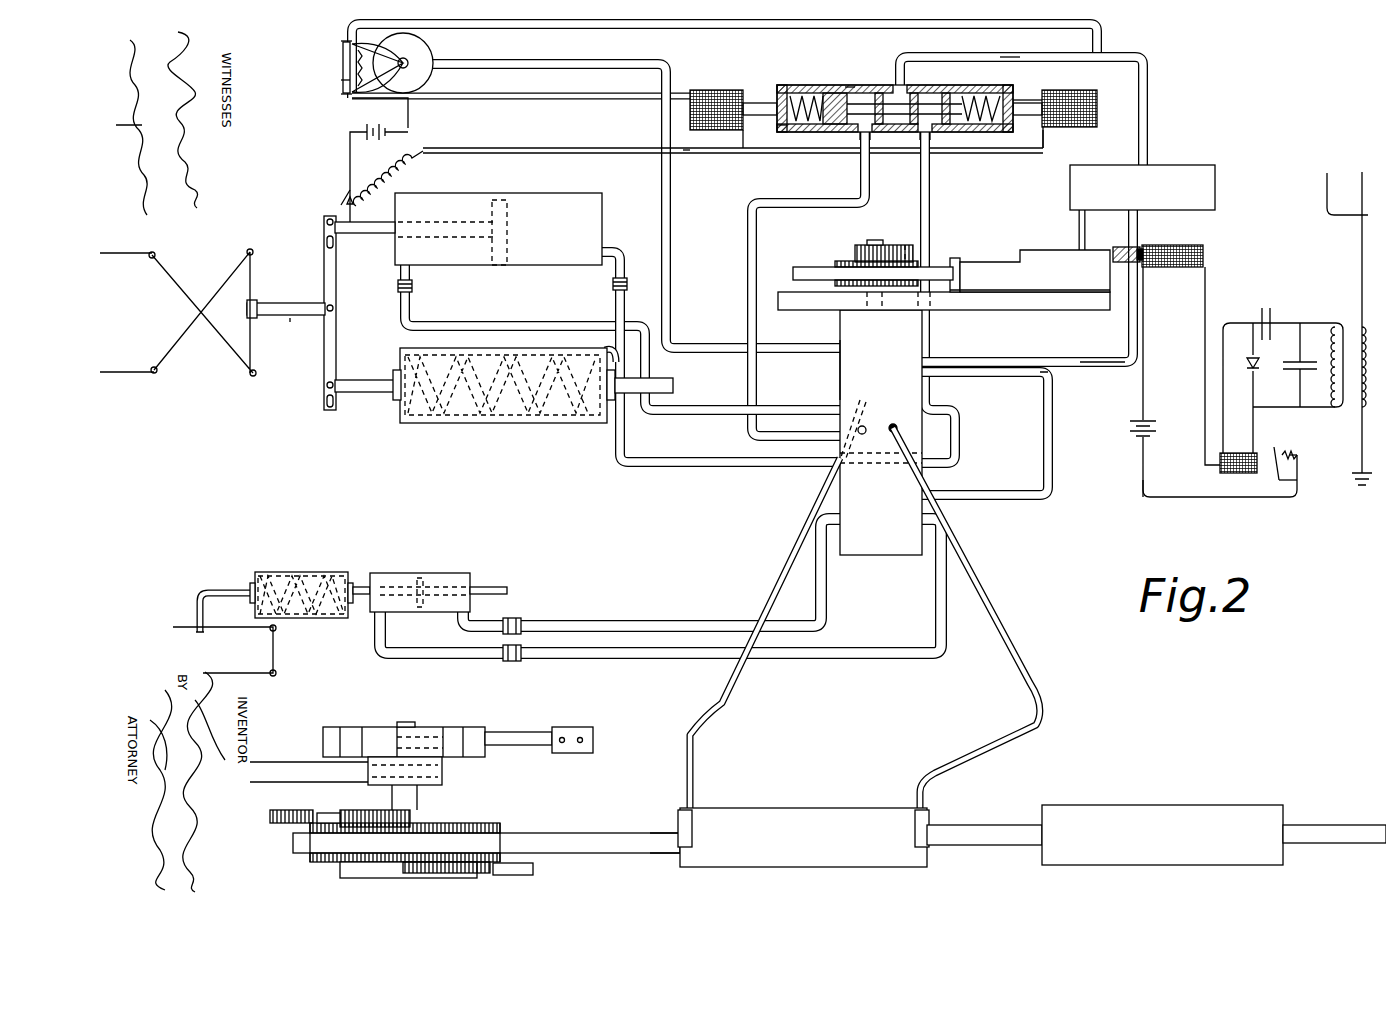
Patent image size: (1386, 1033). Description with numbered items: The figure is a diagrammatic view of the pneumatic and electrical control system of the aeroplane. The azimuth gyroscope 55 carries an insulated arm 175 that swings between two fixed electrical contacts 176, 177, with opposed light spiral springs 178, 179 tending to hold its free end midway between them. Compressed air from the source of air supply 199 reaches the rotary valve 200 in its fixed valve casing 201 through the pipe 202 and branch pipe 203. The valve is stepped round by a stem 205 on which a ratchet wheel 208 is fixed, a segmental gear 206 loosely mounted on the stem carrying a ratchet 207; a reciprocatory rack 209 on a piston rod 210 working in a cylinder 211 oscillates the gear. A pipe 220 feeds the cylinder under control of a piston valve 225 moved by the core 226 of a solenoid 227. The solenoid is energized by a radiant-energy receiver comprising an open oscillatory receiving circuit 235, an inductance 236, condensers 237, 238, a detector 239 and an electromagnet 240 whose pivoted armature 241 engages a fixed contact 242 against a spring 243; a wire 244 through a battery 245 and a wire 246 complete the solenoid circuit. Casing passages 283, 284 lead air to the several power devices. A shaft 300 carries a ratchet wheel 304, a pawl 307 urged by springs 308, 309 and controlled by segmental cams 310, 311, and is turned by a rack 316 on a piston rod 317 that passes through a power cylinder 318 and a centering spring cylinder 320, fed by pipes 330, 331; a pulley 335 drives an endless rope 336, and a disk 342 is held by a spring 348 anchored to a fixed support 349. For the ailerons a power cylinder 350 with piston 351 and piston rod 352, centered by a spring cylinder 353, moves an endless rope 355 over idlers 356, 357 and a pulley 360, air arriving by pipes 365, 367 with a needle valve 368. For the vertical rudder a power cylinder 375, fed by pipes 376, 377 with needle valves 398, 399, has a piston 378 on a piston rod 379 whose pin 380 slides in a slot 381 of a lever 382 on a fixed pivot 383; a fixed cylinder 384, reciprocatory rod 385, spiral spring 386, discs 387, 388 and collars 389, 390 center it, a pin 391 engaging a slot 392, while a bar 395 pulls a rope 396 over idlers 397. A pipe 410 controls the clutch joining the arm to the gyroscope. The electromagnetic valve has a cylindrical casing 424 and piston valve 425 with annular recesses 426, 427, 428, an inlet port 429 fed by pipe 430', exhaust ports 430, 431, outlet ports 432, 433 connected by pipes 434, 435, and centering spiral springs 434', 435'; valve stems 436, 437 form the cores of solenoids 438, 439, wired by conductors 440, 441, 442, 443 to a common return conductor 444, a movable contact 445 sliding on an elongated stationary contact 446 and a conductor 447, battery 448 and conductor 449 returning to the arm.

The azimuth gyroscope 55 is at (426, 52).
The arm 175 is at (362, 90).
The electrical contact 176 is at (342, 58).
The electrical contact 177 is at (343, 80).
The spiral spring 178 is at (345, 96).
The spiral spring 179 is at (341, 46).
The source of air supply 199 is at (1188, 166).
The rotary valve 200 is at (883, 556).
The valve casing 201 is at (838, 378).
The pipe 202 is at (983, 378).
The branch pipe 203 is at (1000, 495).
The stem 205 is at (880, 244).
The segmental gear 206 is at (838, 263).
The ratchet 207 is at (905, 240).
The ratchet wheel 208 is at (866, 242).
The reciprocatory rack 209 is at (796, 272).
The piston rod 210 is at (955, 262).
The cylinder 211 is at (1000, 262).
The pipe 220 is at (1079, 228).
The piston valve 225 is at (1120, 250).
The core 226 is at (1141, 248).
The solenoid 227 is at (1200, 250).
The open oscillatory receiving circuit 235 is at (1360, 240).
The inductance 236 is at (1331, 332).
The condenser 237 is at (1265, 308).
The condenser 238 is at (1296, 370).
The detector 239 is at (1250, 370).
The electromagnet 240 is at (1235, 474).
The pivoted armature 241 is at (1290, 470).
The fixed contact 242 is at (1288, 482).
The spring 243 is at (1287, 452).
The wire 244 is at (1143, 478).
The battery 245 is at (1128, 431).
The wire 246 is at (1205, 378).
The passage 283 is at (893, 434).
The passage 284 is at (848, 438).
The shaft 300 is at (418, 797).
The ratchet wheel 304 is at (480, 823).
The pawl 307 is at (326, 815).
The spring 308 is at (500, 848).
The spring 309 is at (360, 812).
The segmental cam 310 is at (533, 866).
The segmental cam 311 is at (280, 812).
The rack 316 is at (300, 845).
The piston rod 317 is at (620, 832).
The power cylinder 318 is at (805, 810).
The spring cylinder 320 is at (1175, 806).
The pipe 330 is at (918, 815).
The pipe 331 is at (695, 815).
The pulley 335 is at (445, 772).
The endless rope 336 is at (275, 770).
The disk 342 is at (378, 736).
The spring 348 is at (520, 733).
The fixed support 349 is at (590, 730).
The power cylinder 350 is at (415, 573).
The piston 351 is at (428, 580).
The piston rod 352 is at (360, 585).
The spring cylinder 353 is at (300, 573).
The endless rope 355 is at (205, 672).
The idler 356 is at (278, 630).
The idler 357 is at (278, 672).
The pulley 360 is at (515, 621).
The pipe 365 is at (456, 660).
The pipe 367 is at (585, 630).
The needle valve 368 is at (518, 661).
The power cylinder 375 is at (565, 195).
The pipe 376 is at (624, 265).
The pipe 377 is at (510, 322).
The piston 378 is at (500, 200).
The piston rod 379 is at (438, 220).
The pin 380 is at (326, 220).
The slot 381 is at (326, 246).
The lever 382 is at (325, 362).
The fixed pivot 383 is at (334, 308).
The fixed cylinder 384 is at (490, 438).
The reciprocatory rod 385 is at (355, 384).
The spiral spring 386 is at (540, 422).
The disc 387 is at (410, 425).
The disc 388 is at (607, 425).
The collar 389 is at (396, 400).
The collar 390 is at (612, 356).
The pin 391 is at (326, 388).
The slot 392 is at (330, 408).
The bar 395 is at (290, 305).
The rope 396 is at (220, 282).
The idler 397 is at (152, 258).
The needle valve 398 is at (613, 286).
The needle valve 399 is at (412, 288).
The pipe 410 is at (525, 60).
The cylindrical casing 424 is at (865, 85).
The piston valve 425 is at (835, 95).
The annular recess 426 is at (895, 125).
The annular recess 427 is at (945, 122).
The annular recess 428 is at (828, 126).
The inlet port 429 is at (900, 85).
The exhaust port 430 is at (952, 95).
The pipe 430' is at (1021, 45).
The exhaust port 431 is at (850, 87).
The outlet port 432 is at (930, 136).
The outlet port 433 is at (862, 135).
The pipe 434 is at (947, 297).
The spiral spring 434' is at (1005, 118).
The pipe 435 is at (780, 284).
The spiral spring 435' is at (760, 152).
The valve stem 436 is at (1040, 105).
The valve stem 437 is at (760, 103).
The solenoid 438 is at (1097, 125).
The solenoid 439 is at (716, 92).
The electric conductor 440 is at (722, 28).
The electric conductor 441 is at (617, 100).
The conductor 442 is at (1043, 140).
The conductor 443 is at (735, 150).
The common return conductor 444 is at (503, 148).
The movable contact 445 is at (345, 205).
The elongated stationary contact 446 is at (356, 204).
The conductor 447 is at (348, 150).
The battery 448 is at (378, 140).
The conductor 449 is at (409, 113).